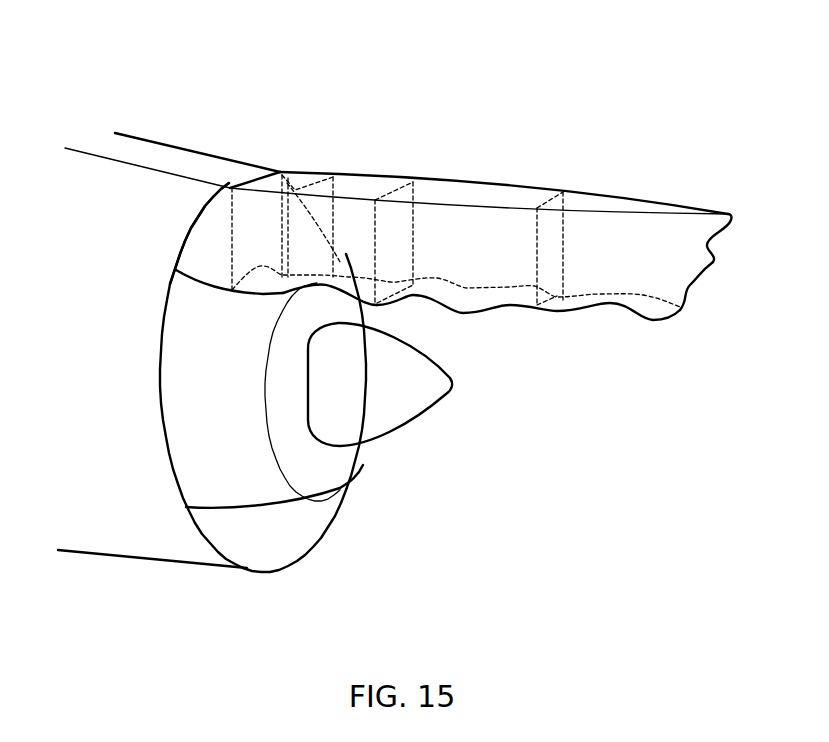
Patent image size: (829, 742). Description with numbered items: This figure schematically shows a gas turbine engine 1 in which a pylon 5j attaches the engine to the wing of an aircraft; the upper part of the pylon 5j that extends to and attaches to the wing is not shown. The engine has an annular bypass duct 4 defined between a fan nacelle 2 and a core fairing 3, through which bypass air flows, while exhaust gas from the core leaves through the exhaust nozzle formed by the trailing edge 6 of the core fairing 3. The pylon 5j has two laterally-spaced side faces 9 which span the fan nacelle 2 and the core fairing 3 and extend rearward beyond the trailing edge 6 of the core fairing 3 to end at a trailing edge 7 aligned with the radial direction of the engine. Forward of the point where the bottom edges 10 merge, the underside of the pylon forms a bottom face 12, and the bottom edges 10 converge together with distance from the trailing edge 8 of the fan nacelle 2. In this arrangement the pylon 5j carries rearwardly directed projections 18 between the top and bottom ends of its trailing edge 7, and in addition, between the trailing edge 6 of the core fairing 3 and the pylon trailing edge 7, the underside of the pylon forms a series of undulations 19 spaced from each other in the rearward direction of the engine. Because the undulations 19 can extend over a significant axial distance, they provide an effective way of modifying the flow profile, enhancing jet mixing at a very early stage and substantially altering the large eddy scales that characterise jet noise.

The gas turbine engine 1 is at (143, 93).
The fan nacelle 2 is at (137, 513).
The core fairing 3 is at (237, 490).
The annular bypass duct 4 is at (226, 408).
The pylon 5j is at (540, 158).
The trailing edge of the core fairing 6 is at (293, 477).
The trailing edge of the pylon 7 is at (712, 243).
The trailing edge of the fan nacelle 8 is at (185, 240).
The side faces of the pylon 9 is at (643, 240).
The bottom edges of the pylon 10 is at (505, 306).
The bottom face of the pylon 12 is at (308, 288).
The rearwardly directed projections 18 is at (717, 258).
The undulations 19 is at (463, 313).